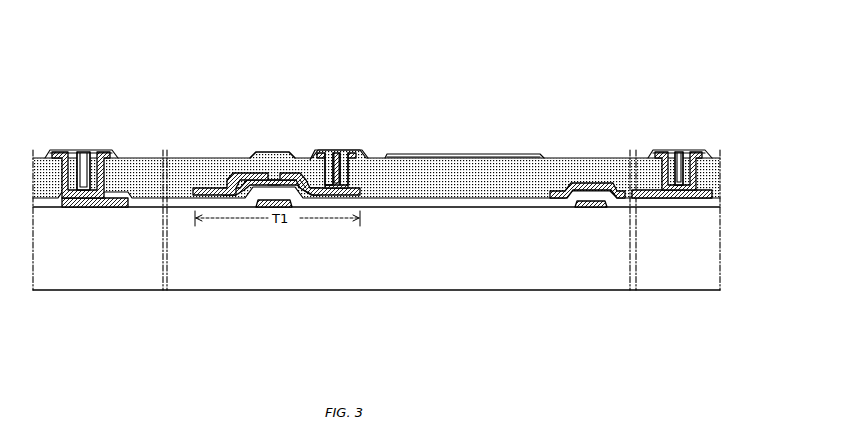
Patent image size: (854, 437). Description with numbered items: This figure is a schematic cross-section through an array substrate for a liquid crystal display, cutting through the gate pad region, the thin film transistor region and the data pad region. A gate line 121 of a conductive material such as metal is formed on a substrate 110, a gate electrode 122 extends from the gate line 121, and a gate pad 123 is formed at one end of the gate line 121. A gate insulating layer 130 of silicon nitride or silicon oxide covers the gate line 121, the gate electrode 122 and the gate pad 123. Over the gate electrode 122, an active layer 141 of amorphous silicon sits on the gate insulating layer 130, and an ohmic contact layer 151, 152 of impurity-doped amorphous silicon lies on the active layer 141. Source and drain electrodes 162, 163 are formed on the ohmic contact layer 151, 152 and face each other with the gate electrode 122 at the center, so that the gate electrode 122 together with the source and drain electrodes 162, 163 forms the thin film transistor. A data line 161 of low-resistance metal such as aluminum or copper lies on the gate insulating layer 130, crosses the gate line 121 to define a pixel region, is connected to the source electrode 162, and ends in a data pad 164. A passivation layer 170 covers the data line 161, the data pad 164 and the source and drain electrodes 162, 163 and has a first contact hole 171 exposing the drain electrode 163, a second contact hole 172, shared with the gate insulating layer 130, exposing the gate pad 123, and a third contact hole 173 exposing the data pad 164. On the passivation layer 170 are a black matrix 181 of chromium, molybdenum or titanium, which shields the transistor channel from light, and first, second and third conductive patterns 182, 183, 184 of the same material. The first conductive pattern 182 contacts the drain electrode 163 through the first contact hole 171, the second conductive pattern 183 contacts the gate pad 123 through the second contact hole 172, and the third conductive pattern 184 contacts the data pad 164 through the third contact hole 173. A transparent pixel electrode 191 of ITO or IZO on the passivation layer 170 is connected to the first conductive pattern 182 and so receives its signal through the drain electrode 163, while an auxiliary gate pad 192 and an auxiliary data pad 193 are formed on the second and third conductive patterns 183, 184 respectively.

The substrate 110 is at (117, 275).
The gate line 121 is at (590, 207).
The gate electrode 122 is at (261, 207).
The gate pad 123 is at (90, 207).
The gate insulating layer 130 is at (46, 207).
The active layer 141 is at (273, 184).
The ohmic contact layer 151 is at (225, 187).
The ohmic contact layer 152 is at (310, 184).
The data line 161 is at (588, 182).
The source electrode 162 is at (253, 180).
The drain electrode 163 is at (300, 176).
The data pad 164 is at (680, 207).
The passivation layer 170 is at (40, 160).
The first contact hole 171 is at (337, 151).
The second contact hole 172 is at (85, 152).
The third contact hole 173 is at (677, 151).
The black matrix 181 is at (265, 157).
The first conductive pattern 182 is at (357, 157).
The second conductive pattern 183 is at (70, 152).
The third conductive pattern 184 is at (669, 152).
The pixel electrode 191 is at (412, 155).
The auxiliary gate pad 192 is at (111, 152).
The auxiliary data pad 193 is at (691, 152).